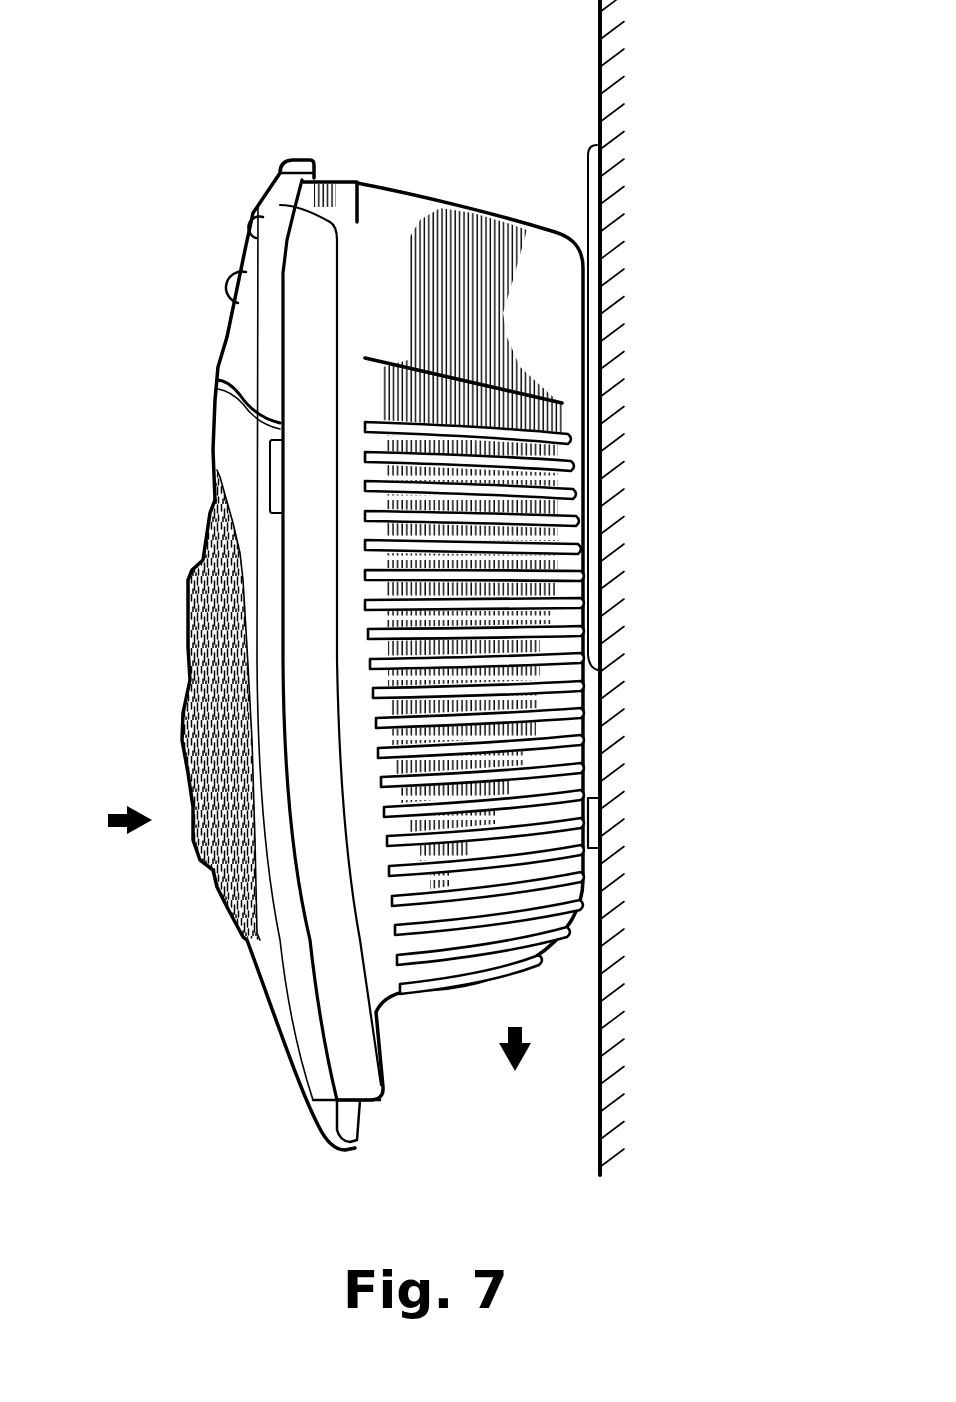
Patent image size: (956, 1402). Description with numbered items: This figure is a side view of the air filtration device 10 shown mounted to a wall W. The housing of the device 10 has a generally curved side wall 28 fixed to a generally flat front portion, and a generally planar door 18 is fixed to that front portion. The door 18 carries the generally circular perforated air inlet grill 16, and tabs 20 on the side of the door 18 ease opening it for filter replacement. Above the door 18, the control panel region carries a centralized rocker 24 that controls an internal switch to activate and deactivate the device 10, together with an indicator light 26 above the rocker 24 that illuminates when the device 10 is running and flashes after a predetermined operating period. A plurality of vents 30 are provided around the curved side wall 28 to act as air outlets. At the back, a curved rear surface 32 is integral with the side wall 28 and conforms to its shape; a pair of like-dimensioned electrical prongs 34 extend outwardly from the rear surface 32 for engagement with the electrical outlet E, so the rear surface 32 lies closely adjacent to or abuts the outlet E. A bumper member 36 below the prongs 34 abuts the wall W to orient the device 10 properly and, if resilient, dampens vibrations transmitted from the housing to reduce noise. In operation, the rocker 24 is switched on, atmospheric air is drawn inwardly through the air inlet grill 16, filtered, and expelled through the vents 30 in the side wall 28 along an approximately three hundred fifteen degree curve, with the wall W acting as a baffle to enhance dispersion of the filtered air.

The air filtration device 10 is at (436, 100).
The air inlet grill 16 is at (187, 638).
The door 18 is at (232, 423).
The tabs 20 is at (272, 470).
The rocker 24 is at (237, 273).
The indicator light 26 is at (250, 223).
The curved side wall 28 is at (390, 233).
The vents 30 is at (418, 973).
The rear surface 32 is at (590, 553).
The electrical prongs 34 is at (602, 300).
The bumper member 36 is at (600, 818).
The wall W is at (613, 153).
The electrical outlet E is at (600, 396).